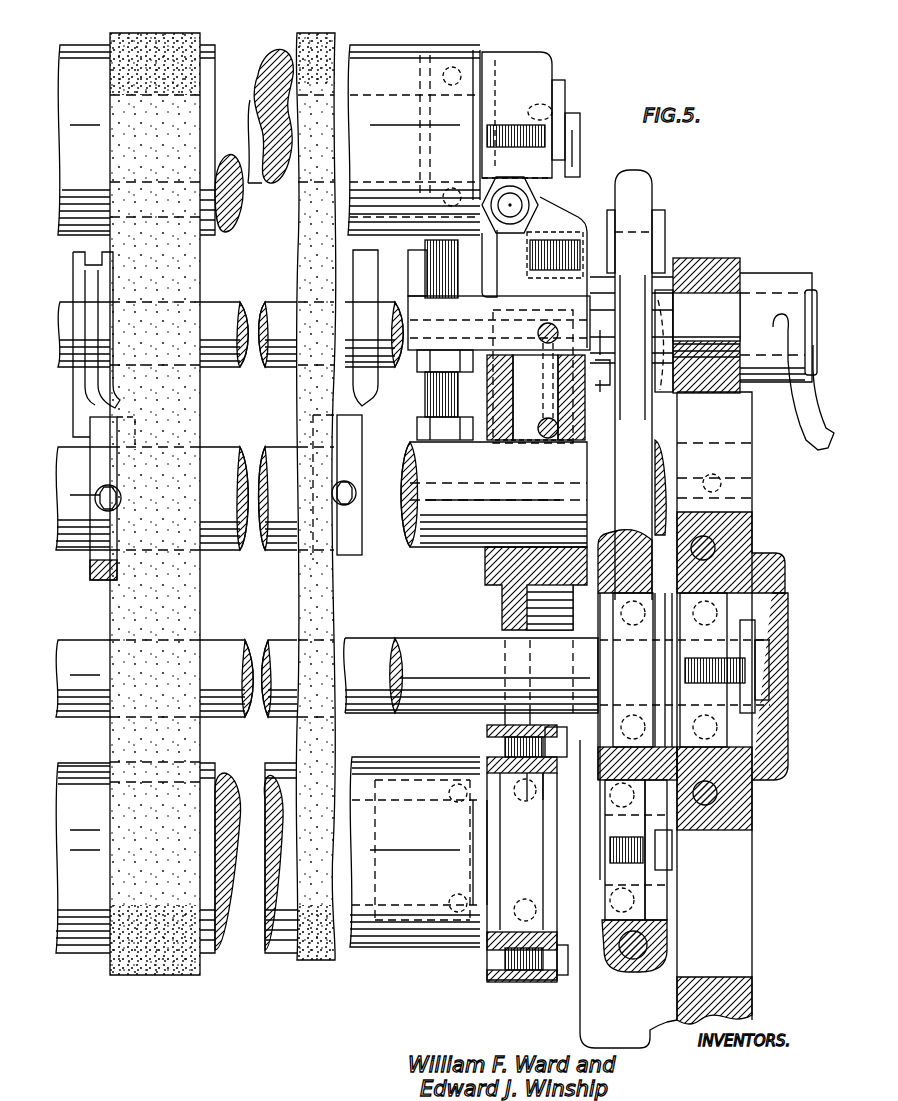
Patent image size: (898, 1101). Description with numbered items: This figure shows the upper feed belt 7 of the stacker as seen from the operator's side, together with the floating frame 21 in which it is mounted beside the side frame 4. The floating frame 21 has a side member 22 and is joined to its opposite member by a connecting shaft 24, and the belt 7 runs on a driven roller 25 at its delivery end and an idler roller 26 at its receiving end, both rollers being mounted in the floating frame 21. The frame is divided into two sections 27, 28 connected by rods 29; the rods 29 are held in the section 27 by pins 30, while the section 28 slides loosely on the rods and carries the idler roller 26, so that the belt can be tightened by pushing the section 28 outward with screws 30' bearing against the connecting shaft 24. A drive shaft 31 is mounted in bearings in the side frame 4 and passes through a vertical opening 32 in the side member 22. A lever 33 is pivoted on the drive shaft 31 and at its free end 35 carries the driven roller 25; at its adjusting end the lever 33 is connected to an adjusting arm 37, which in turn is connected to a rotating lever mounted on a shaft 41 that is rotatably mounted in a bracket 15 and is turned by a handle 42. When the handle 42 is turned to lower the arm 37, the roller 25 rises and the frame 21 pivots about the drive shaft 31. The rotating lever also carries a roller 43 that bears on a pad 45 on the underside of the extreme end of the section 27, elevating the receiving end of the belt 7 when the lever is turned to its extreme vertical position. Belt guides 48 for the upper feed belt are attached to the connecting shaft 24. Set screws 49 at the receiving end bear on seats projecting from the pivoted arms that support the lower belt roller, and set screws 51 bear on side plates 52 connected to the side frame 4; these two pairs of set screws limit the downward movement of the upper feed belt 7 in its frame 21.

The side frame 4 is at (750, 822).
The upper feed belt 7 is at (195, 962).
The bracket 15 is at (706, 260).
The floating frame 21 is at (552, 212).
The side member 22 is at (500, 600).
The connecting shaft 24 is at (268, 447).
The driven roller 25 is at (105, 955).
The idler roller 26 is at (90, 45).
The section 27 is at (490, 555).
The section 28 is at (493, 262).
The rod 29 is at (533, 360).
The pin 30 is at (523, 397).
The screw 30' is at (429, 340).
The drive shaft 31 is at (395, 645).
The vertical opening 32 is at (528, 637).
The lever 33 is at (606, 460).
The free end 35 is at (612, 950).
The adjusting arm 37 is at (660, 176).
The shaft 41 is at (226, 305).
The handle 42 is at (805, 440).
The roller 43 is at (490, 442).
The pad 45 is at (530, 470).
The belt guide 48 is at (112, 277).
The set screw 49 is at (508, 200).
The set screw 51 is at (660, 936).
The side plate 52 is at (592, 1011).